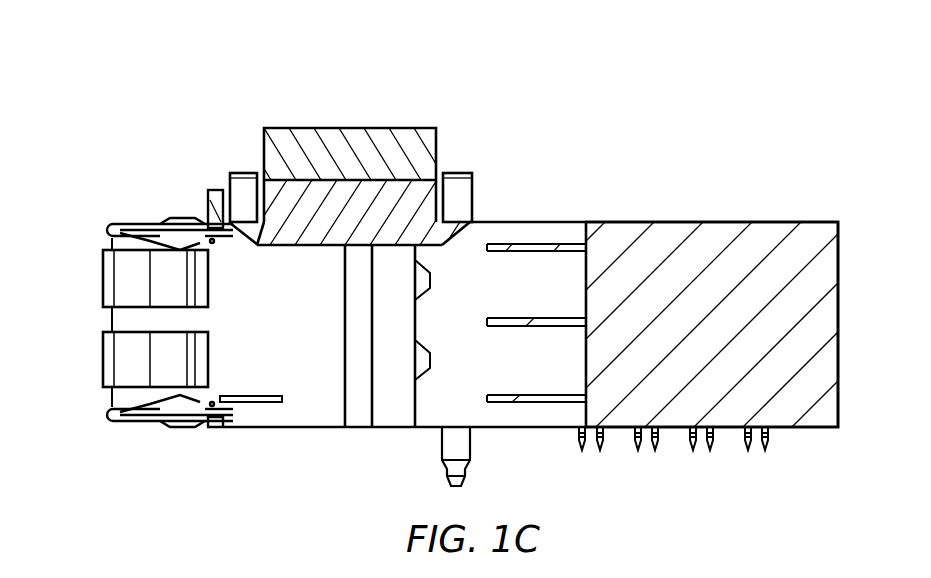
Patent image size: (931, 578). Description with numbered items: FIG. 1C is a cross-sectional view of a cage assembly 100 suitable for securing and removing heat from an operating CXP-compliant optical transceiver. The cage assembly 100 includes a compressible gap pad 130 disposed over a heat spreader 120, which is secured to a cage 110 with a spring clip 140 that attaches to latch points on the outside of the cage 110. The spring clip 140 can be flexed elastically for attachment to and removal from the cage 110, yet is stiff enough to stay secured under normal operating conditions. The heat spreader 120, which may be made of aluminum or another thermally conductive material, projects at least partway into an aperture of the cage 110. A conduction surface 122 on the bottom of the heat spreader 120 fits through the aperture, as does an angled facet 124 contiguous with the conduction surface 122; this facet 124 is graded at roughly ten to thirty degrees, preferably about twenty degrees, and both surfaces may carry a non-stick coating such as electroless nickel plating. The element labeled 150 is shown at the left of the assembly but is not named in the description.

The cage assembly 100 is at (662, 90).
The cage 110 is at (758, 221).
The heat spreader 120 is at (428, 230).
The conduction surface 122 is at (330, 246).
The angled facet 124 is at (247, 242).
The compressible gap pad 130 is at (405, 127).
The spring clip 140 is at (238, 171).
The EMI gasket / contact members 150 is at (124, 355).